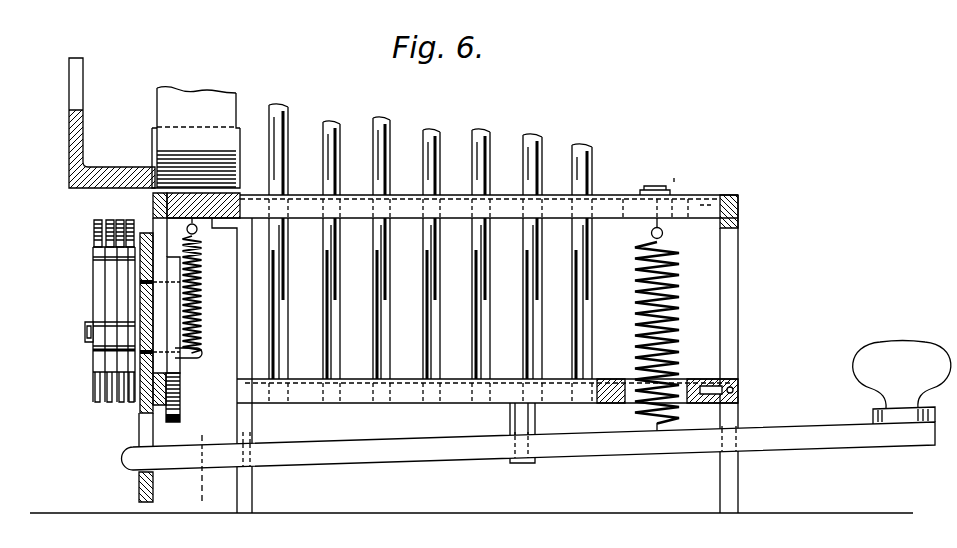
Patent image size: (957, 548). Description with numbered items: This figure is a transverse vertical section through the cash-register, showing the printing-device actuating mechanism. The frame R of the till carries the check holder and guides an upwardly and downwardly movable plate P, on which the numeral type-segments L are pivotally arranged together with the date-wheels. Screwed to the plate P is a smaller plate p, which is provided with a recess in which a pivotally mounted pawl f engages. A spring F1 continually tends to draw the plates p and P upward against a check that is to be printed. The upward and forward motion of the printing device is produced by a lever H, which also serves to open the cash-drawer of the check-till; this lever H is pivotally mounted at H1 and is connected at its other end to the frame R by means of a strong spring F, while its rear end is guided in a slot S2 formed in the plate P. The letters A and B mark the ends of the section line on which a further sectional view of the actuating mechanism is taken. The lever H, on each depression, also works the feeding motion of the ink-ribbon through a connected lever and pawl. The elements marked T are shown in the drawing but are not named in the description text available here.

The section line point B is at (247, 58).
The frame R is at (158, 208).
The teeth T is at (497, 168).
The numeral type-segments L is at (100, 281).
The plate P is at (140, 406).
The smaller plate p is at (178, 270).
The spring F1 is at (198, 301).
The pawl f is at (180, 397).
The slot S2 is at (134, 457).
The section line point A is at (210, 469).
The strong spring F is at (678, 303).
The pivot H1 is at (510, 470).
The lever H is at (536, 406).